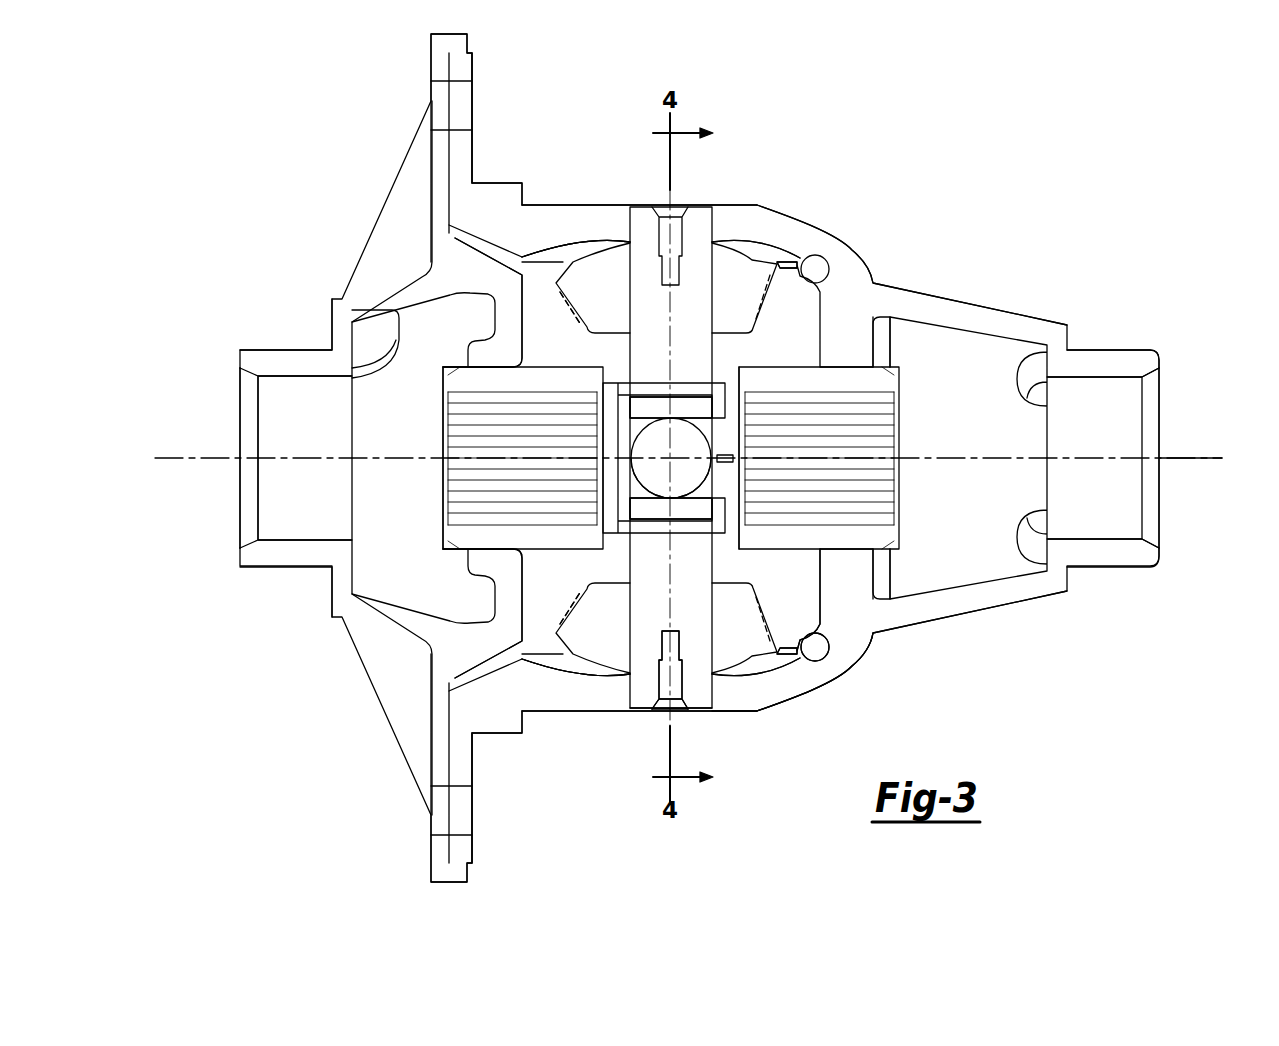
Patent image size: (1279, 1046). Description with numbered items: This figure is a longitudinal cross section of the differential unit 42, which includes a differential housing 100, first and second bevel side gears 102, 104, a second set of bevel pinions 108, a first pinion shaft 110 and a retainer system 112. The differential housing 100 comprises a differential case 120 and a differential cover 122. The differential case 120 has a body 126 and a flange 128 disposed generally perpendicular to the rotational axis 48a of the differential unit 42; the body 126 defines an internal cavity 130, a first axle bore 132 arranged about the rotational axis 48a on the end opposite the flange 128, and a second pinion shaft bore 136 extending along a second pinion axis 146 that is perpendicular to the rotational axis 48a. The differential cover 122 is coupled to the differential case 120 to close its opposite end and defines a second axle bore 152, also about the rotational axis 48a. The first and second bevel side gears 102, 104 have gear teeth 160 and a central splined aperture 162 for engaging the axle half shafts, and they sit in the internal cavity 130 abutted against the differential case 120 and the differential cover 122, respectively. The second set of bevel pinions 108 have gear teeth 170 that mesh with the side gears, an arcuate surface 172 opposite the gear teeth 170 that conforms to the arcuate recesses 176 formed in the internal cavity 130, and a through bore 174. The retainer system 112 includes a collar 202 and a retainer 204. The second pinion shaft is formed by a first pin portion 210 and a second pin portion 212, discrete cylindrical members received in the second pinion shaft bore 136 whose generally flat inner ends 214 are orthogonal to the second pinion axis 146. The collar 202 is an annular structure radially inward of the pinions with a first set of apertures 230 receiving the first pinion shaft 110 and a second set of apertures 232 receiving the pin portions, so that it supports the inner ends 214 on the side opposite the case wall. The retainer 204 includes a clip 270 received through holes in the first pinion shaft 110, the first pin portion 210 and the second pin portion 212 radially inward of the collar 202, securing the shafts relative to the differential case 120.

The differential unit 42 is at (375, 138).
The rotational axis 48a is at (1208, 460).
The differential housing 100 is at (496, 186).
The first bevel side gear 102 is at (808, 313).
The second bevel side gear 104 is at (545, 587).
The second set of bevel pinions 108 is at (735, 660).
The first pinion shaft 110 is at (687, 443).
The retainer system 112 is at (645, 722).
The differential case 120 is at (843, 252).
The differential cover 122 is at (387, 226).
The body 126 is at (575, 208).
The flange 128 is at (467, 153).
The internal cavity 130 is at (818, 650).
The first axle bore 132 is at (1125, 428).
The second pinion shaft bore 136 is at (718, 225).
The second pinion axis 146 is at (674, 197).
The second axle bore 152 is at (273, 425).
The gear teeth 160 is at (565, 282).
The central splined aperture 162 is at (473, 425).
The gear teeth 170 is at (812, 255).
The surface 172 is at (768, 262).
The through bore 174 is at (597, 258).
The arcuate recesses 176 is at (600, 660).
The collar 202 is at (615, 378).
The retainer 204 is at (597, 523).
The first pin portion 210 is at (700, 710).
The second pin portion 212 is at (643, 223).
The inner ends 214 is at (703, 407).
The first set of apertures 230 is at (745, 425).
The second set of apertures 232 is at (622, 560).
The clip 270 is at (697, 463).